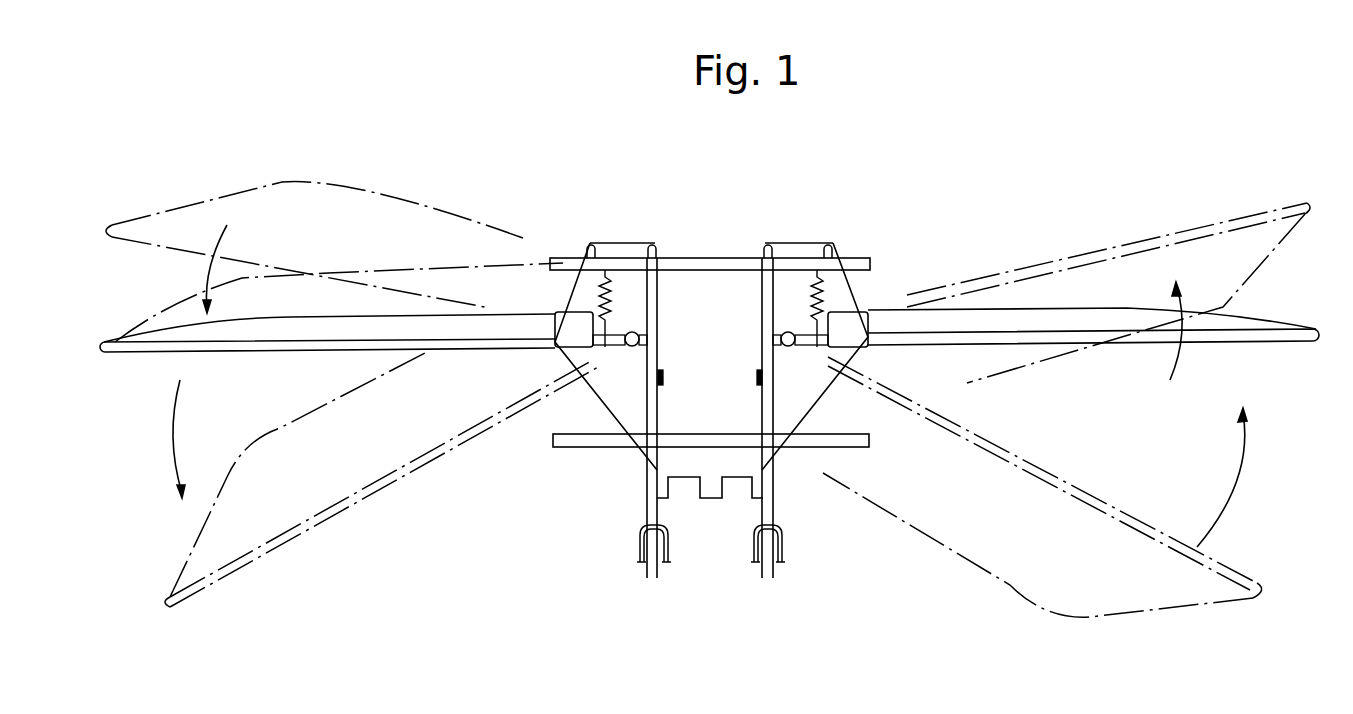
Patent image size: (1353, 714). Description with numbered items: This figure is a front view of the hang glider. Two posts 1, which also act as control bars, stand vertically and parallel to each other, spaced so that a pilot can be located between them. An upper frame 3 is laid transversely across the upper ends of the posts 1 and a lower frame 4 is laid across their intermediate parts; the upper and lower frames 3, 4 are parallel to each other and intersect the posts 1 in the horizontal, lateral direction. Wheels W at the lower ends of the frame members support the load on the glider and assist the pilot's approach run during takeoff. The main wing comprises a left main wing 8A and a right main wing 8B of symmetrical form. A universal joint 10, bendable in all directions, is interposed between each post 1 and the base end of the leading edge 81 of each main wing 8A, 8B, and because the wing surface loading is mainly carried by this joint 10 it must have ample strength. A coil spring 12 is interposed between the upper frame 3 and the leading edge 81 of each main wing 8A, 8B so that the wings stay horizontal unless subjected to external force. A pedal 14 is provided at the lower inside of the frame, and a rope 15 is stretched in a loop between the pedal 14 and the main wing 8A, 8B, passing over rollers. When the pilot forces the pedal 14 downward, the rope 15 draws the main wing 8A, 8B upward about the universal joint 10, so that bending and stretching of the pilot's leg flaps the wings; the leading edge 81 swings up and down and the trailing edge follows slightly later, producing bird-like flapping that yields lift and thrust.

The post 1 is at (648, 402).
The upper frame 3 is at (700, 260).
The lower frame 4 is at (861, 446).
The left main wing 8A is at (1113, 308).
The right main wing 8B is at (123, 352).
The leading edge 81 is at (320, 345).
The universal joint 10 is at (634, 332).
The coil spring 12 is at (605, 290).
The pedal 14 is at (683, 478).
The rope 15 is at (600, 243).
The wheel W is at (650, 572).